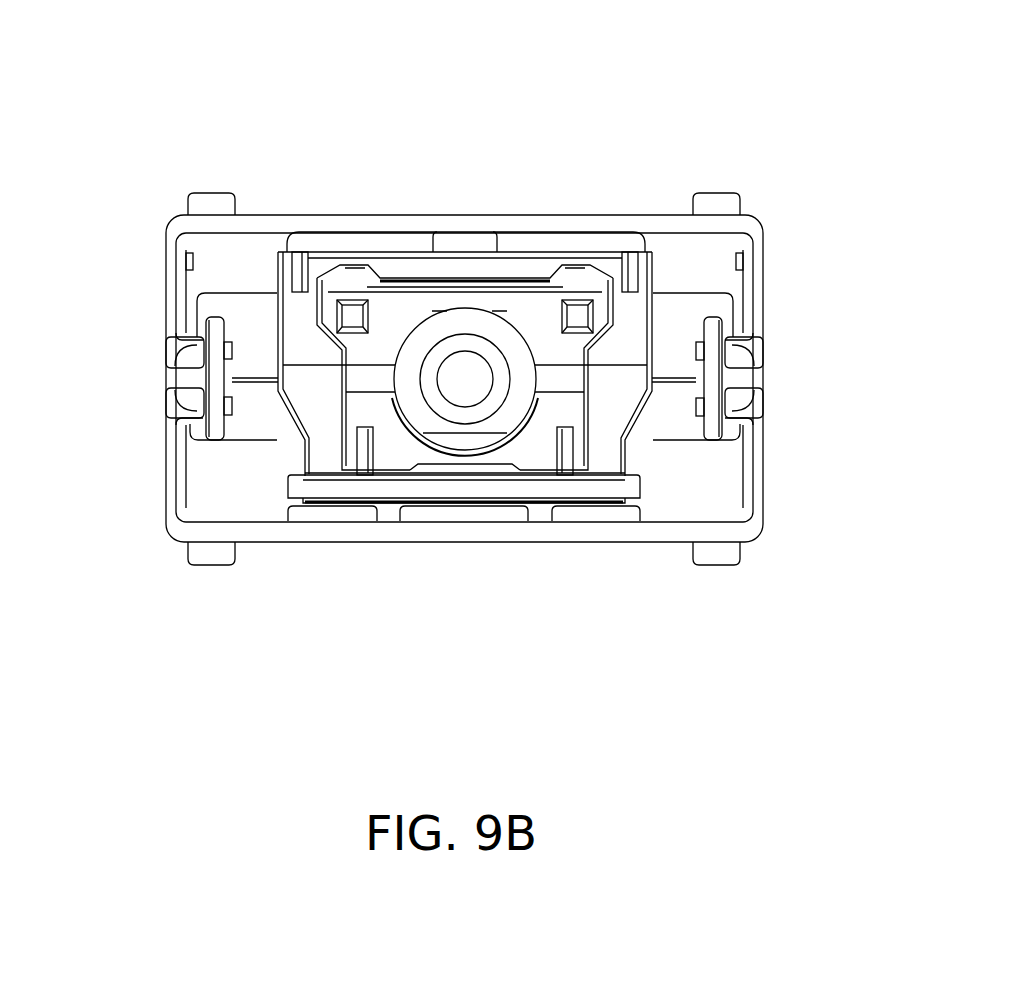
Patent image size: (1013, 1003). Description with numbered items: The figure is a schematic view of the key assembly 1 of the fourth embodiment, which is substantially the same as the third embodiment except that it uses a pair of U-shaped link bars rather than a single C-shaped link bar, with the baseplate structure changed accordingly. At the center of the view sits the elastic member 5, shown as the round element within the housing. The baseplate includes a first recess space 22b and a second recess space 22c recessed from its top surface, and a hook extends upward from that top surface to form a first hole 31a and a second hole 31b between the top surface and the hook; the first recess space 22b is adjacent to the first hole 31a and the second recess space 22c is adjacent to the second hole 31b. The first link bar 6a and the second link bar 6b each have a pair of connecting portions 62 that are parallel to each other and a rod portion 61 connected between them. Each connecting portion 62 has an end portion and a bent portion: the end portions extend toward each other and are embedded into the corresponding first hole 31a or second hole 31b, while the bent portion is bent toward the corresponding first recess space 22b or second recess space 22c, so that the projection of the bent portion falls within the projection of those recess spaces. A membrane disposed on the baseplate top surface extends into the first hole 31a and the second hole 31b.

The key assembly 1 is at (98, 78).
The elastic member 5 is at (462, 362).
The second link bar 6b is at (345, 224).
The first link bar 6a is at (372, 626).
The rod portion 61 is at (368, 532).
The connecting portion 62 is at (177, 490).
The first hole 31a is at (692, 407).
The second hole 31b is at (698, 347).
The first recess space 22b is at (752, 398).
The second recess space 22c is at (752, 358).